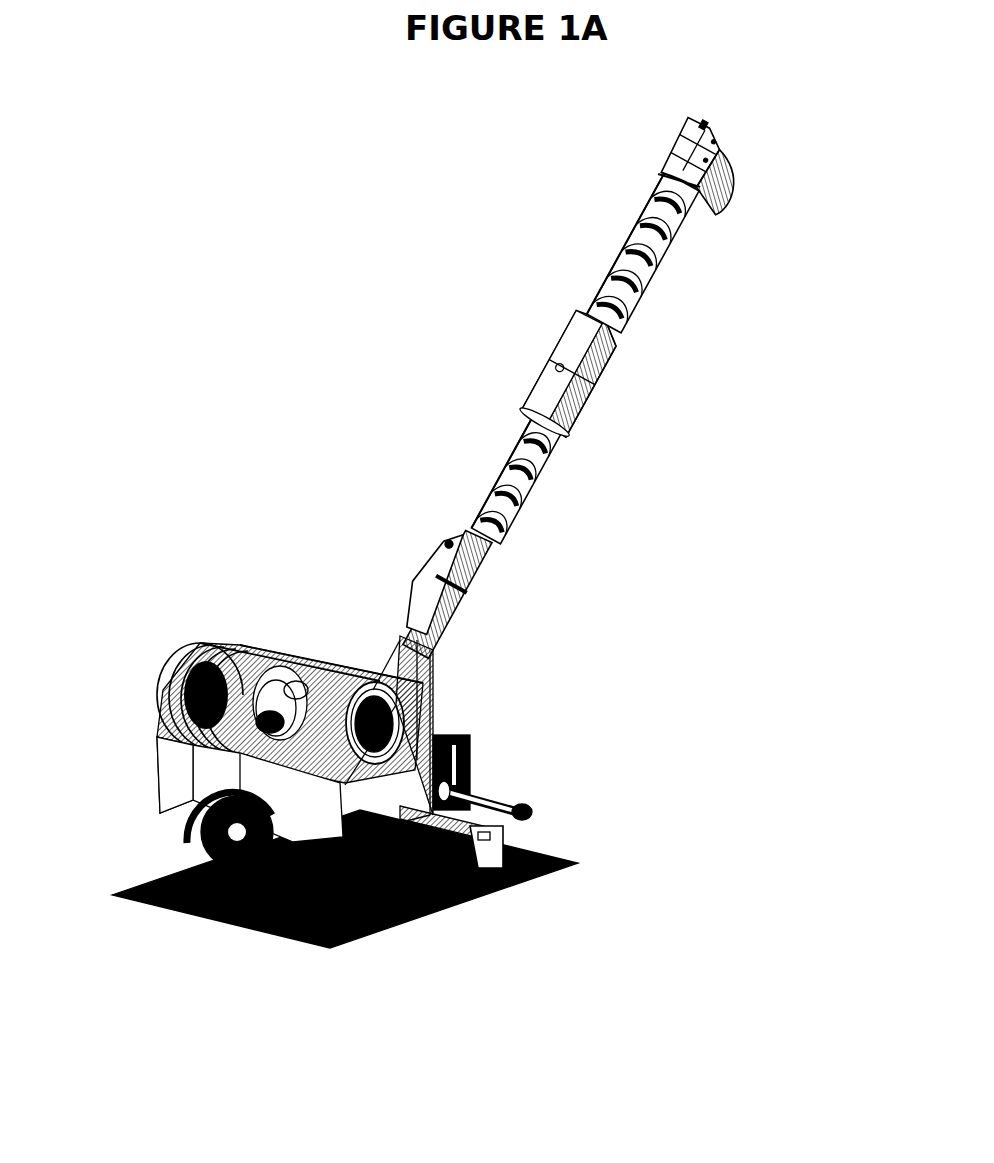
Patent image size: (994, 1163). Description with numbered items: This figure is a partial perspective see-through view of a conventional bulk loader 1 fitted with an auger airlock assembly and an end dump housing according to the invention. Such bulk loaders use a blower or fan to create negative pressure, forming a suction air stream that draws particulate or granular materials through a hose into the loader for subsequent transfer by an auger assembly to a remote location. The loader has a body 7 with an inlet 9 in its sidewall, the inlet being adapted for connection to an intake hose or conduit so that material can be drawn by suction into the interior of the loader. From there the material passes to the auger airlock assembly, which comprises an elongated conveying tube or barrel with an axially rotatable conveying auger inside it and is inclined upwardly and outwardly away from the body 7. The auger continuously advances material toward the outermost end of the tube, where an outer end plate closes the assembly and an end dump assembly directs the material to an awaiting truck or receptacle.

The bulk loader 1 is at (127, 675).
The body 7 is at (177, 775).
The inlet 9 is at (177, 912).